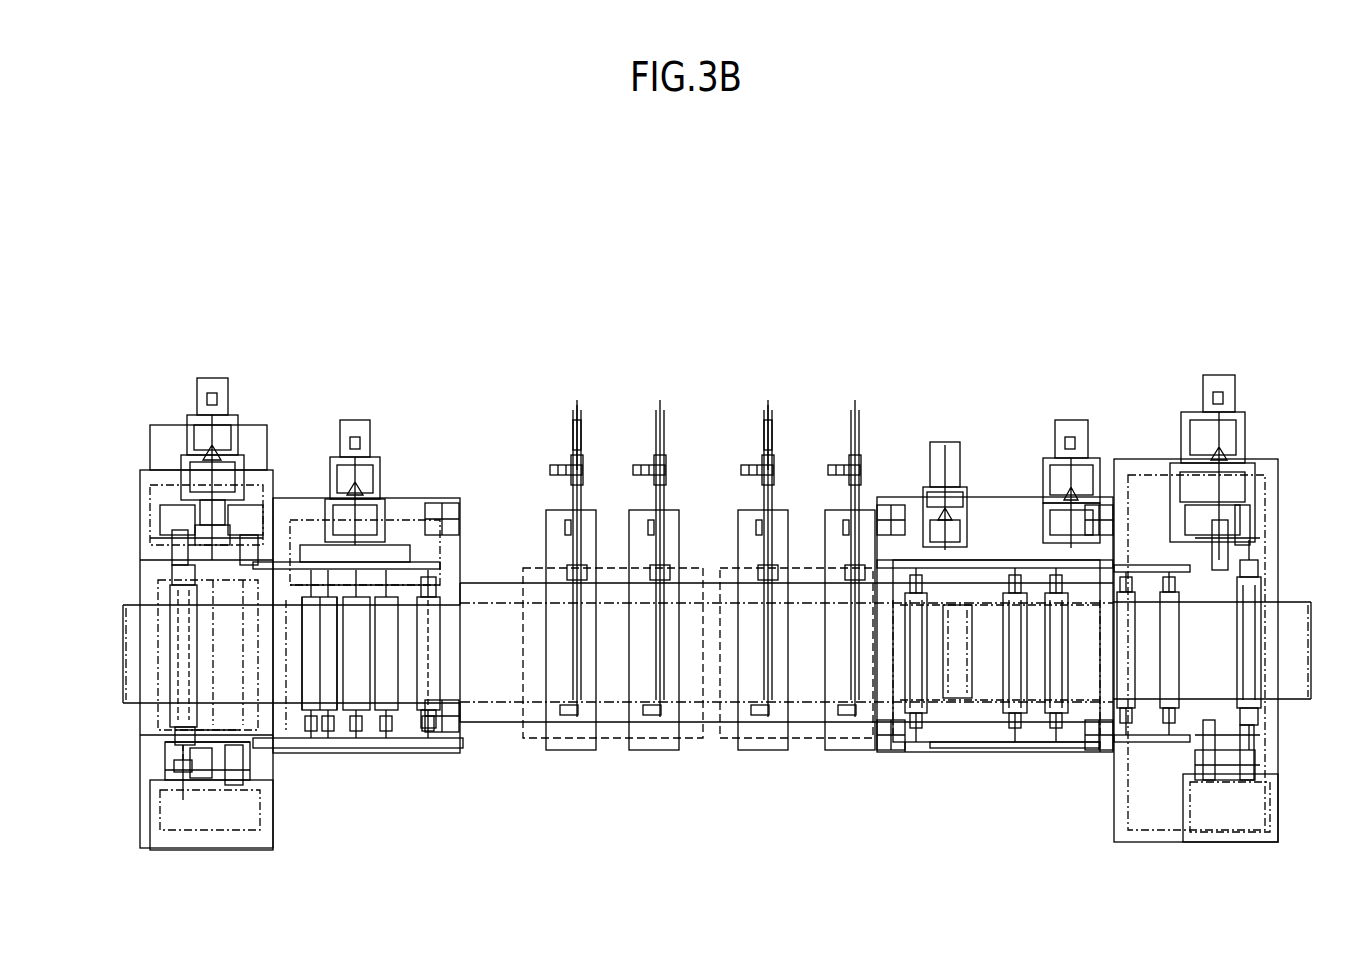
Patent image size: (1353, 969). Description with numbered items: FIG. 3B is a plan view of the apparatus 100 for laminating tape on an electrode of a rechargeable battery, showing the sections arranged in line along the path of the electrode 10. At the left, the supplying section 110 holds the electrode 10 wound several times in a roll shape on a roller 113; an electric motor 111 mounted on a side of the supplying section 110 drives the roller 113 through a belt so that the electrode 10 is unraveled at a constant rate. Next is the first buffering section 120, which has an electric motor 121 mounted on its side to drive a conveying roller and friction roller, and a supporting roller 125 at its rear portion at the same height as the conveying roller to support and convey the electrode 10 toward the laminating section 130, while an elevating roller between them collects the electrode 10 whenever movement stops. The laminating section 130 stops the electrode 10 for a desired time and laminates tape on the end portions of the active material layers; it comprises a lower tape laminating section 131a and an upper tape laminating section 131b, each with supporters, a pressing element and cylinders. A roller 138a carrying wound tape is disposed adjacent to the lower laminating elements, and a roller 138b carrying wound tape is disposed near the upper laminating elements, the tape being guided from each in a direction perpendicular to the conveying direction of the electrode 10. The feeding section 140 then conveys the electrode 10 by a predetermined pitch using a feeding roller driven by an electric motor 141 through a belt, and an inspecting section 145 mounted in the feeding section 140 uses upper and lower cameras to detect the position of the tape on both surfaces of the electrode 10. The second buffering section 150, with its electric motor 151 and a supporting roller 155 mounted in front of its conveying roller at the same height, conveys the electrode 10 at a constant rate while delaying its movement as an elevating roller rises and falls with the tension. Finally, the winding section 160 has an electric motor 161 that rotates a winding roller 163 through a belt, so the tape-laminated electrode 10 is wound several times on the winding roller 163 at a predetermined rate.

The apparatus for laminating tape on an electrode 100 is at (980, 212).
The electrode 10 is at (476, 603).
The supplying section 110 is at (287, 350).
The electric motor 111 is at (226, 385).
The roller 113 is at (170, 688).
The first buffering section 120 is at (437, 413).
The electric motor 121 is at (361, 420).
The supporting roller 125 is at (440, 688).
The laminating section 130 is at (706, 355).
The lower tape laminating section 131a is at (660, 378).
The upper tape laminating section 131b is at (855, 378).
The roller 138a is at (572, 436).
The roller 138b is at (764, 436).
The feeding section 140 is at (925, 373).
The electric motor 141 is at (952, 440).
The inspecting section 145 is at (950, 702).
The second buffering section 150 is at (1033, 370).
The electric motor 151 is at (1078, 417).
The supporting roller 155 is at (1007, 690).
The winding section 160 is at (1175, 372).
The electric motor 161 is at (1222, 378).
The winding roller 163 is at (1262, 688).